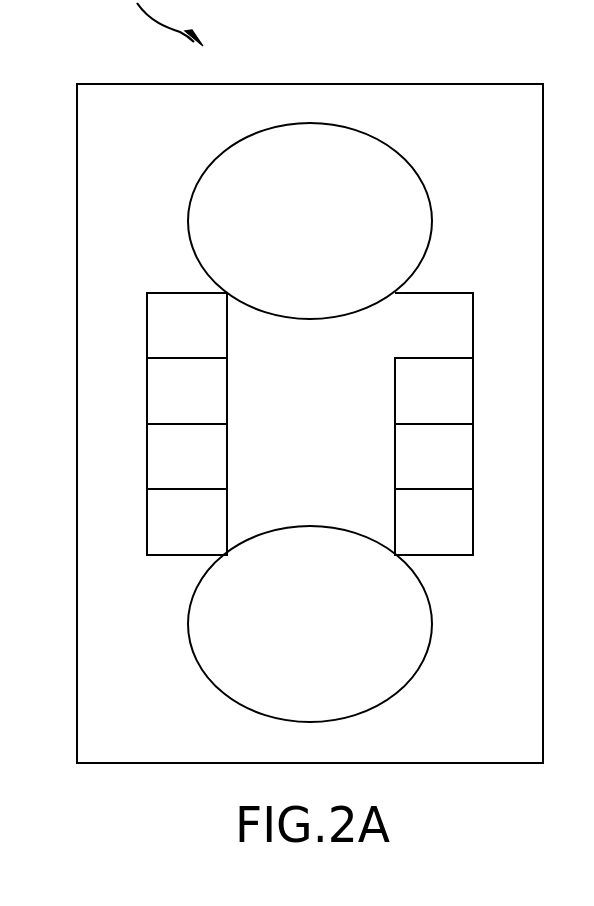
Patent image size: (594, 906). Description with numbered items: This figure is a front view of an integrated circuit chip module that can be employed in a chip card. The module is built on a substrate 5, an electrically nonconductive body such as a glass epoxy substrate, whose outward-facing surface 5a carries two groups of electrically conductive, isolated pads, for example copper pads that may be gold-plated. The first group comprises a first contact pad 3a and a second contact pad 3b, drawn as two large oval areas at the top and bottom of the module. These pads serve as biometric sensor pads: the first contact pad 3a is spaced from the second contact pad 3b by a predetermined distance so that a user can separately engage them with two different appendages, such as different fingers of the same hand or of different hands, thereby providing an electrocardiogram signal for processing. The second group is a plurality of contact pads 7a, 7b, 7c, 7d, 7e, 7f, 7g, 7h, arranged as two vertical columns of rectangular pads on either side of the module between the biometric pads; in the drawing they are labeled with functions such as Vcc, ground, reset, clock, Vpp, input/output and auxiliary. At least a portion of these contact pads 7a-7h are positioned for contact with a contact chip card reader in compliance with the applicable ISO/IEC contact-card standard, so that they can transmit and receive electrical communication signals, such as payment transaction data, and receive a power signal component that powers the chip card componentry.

The substrate 5 is at (473, 85).
The outward-facing surface 5a is at (117, 110).
The first contact pad 3a is at (432, 217).
The second contact pad 3b is at (432, 628).
The contact pad 7a is at (148, 343).
The contact pad 7b is at (465, 308).
The contact pad 7c is at (148, 412).
The contact pad 7d is at (465, 405).
The contact pad 7e is at (148, 477).
The contact pad 7f is at (465, 471).
The contact pad 7g is at (148, 541).
The contact pad 7h is at (465, 537).